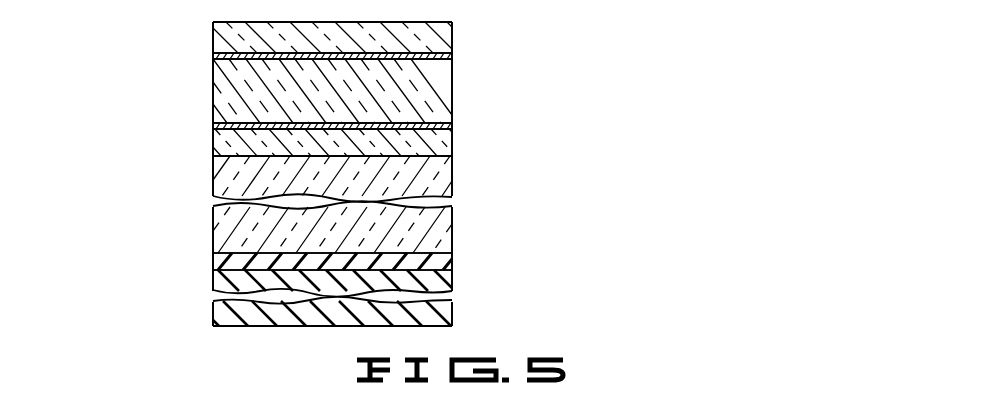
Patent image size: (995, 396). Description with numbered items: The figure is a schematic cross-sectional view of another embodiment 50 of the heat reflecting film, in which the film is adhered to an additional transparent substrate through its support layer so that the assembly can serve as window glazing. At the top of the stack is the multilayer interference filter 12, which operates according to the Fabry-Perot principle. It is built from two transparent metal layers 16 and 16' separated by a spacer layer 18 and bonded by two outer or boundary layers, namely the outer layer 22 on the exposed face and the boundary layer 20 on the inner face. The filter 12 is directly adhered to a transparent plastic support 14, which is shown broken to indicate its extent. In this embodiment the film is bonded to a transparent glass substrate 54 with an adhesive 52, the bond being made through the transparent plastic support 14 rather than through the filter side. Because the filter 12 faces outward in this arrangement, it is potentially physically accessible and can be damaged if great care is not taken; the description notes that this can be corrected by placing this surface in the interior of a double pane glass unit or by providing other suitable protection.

The embodiment 50 is at (198, 164).
The multilayer interference filter 12 is at (205, 153).
The outer layer 22 is at (452, 36).
The transparent metal layer 16 is at (572, 55).
The spacer layer 18 is at (446, 91).
The transparent metal layer 16' is at (571, 117).
The boundary layer 20 is at (452, 144).
The transparent support 14 is at (452, 199).
The adhesive 52 is at (452, 261).
The transparent glass substrate 54 is at (452, 309).